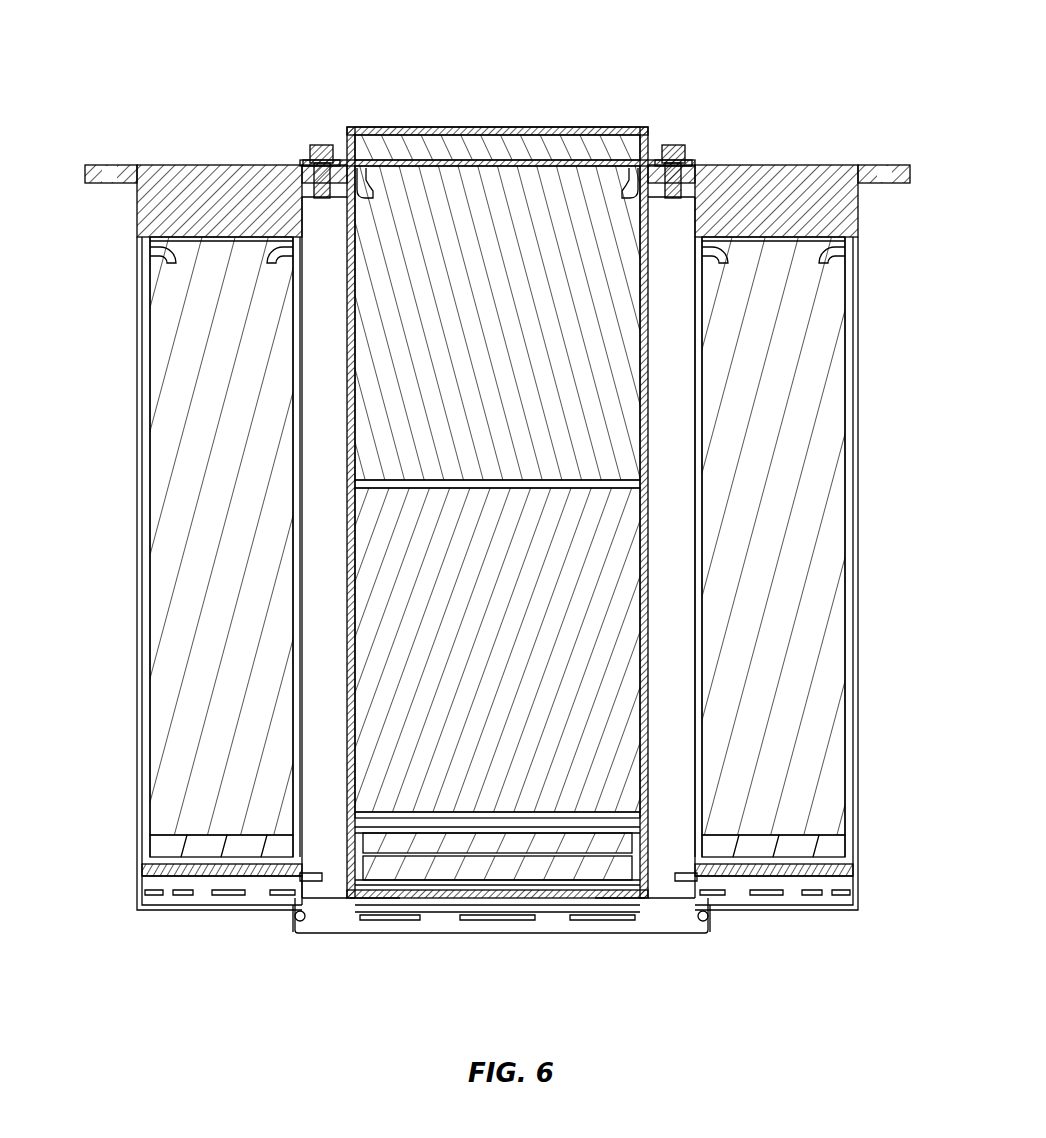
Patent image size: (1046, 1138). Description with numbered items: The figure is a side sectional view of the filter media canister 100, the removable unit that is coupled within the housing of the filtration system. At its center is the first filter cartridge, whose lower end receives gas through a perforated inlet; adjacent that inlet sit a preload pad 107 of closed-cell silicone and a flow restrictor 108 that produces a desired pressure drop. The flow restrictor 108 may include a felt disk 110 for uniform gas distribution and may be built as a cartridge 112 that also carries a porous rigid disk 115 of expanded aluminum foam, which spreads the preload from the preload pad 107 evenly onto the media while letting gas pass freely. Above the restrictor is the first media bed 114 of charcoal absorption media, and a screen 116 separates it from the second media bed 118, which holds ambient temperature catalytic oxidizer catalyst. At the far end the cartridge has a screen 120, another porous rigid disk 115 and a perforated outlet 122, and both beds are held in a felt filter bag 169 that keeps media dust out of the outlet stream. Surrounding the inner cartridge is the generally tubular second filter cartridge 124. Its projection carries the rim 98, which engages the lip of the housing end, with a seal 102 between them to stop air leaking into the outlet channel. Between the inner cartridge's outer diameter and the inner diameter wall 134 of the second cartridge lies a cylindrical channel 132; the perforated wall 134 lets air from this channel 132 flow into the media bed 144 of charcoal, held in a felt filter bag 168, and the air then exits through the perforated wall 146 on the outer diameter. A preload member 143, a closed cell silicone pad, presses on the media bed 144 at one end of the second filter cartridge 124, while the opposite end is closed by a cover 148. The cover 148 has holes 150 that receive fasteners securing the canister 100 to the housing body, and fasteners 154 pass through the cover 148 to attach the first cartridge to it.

The filter media canister 100 is at (846, 58).
The rim 98 is at (295, 935).
The seal 102 is at (290, 920).
The preload pad 107 is at (395, 895).
The flow restrictor 108 is at (495, 895).
The felt disk 110 is at (498, 815).
The cartridge 112 is at (585, 812).
The first media bed 114 is at (524, 692).
The porous rigid disk 115 is at (430, 127).
The screen 116 is at (500, 488).
The second media bed 118 is at (524, 360).
The screen 120 is at (500, 160).
The perforated outlet 122 is at (575, 127).
The second filter cartridge 124 is at (770, 910).
The cylindrical channel 132 is at (344, 693).
The inner diameter wall 134 is at (347, 560).
The preload member 143 is at (155, 850).
The media bed 144 is at (240, 655).
The perforated wall 146 is at (137, 570).
The cover 148 is at (785, 166).
The holes 150 is at (103, 166).
The fasteners 154 is at (320, 145).
The filter bag 168 is at (160, 432).
The filter bag 169 is at (500, 166).